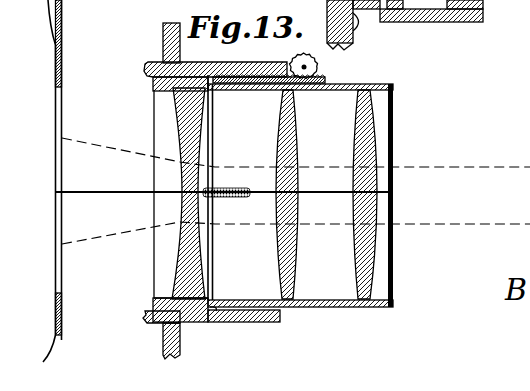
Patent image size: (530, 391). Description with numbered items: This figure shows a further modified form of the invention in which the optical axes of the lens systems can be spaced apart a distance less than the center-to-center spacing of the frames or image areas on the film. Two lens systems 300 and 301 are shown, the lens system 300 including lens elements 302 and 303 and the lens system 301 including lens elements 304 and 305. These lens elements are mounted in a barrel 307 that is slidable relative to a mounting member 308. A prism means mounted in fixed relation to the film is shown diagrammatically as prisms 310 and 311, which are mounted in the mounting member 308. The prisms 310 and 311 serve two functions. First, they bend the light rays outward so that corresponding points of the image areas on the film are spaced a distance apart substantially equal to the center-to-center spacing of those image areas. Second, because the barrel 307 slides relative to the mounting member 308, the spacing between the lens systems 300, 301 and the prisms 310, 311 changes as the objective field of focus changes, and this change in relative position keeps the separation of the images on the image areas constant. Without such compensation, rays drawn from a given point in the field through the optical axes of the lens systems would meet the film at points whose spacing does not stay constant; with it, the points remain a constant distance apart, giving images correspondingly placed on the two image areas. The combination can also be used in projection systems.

The lens system 300 is at (393, 133).
The lens system 301 is at (393, 263).
The lens element 302 is at (356, 139).
The lens element 303 is at (281, 122).
The lens element 304 is at (357, 248).
The lens element 305 is at (279, 260).
The barrel 307 is at (315, 307).
The mounting member 308 is at (193, 312).
The prism 310 is at (176, 118).
The prism 311 is at (177, 270).